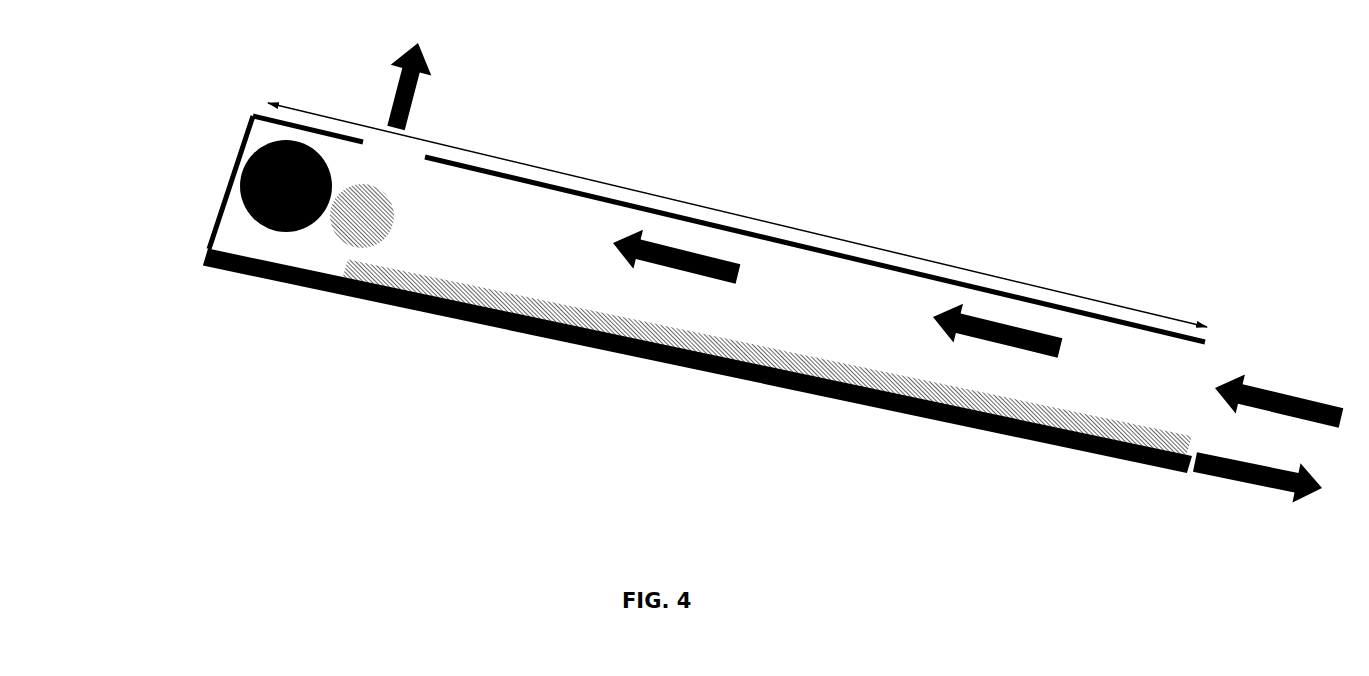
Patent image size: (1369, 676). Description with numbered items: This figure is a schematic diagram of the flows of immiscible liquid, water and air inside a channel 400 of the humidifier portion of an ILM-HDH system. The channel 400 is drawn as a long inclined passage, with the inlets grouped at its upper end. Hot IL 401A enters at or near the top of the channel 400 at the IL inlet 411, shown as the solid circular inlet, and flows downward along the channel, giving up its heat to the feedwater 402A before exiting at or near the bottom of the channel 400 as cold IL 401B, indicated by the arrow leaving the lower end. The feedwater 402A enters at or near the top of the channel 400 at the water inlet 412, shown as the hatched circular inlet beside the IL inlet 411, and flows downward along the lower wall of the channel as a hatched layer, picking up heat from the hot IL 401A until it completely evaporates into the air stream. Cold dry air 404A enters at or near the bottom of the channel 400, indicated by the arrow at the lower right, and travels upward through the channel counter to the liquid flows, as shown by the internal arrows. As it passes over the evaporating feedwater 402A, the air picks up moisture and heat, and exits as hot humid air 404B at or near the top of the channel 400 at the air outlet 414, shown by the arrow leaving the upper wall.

The channel 400 is at (838, 52).
The hot IL 401A is at (250, 272).
The cold IL 401B is at (1276, 493).
The feedwater 402A is at (338, 260).
The cold dry air 404A is at (1287, 401).
The hot humid air 404B is at (422, 76).
The IL inlet 411 is at (240, 185).
The water inlet 412 is at (388, 193).
The air outlet 414 is at (416, 150).